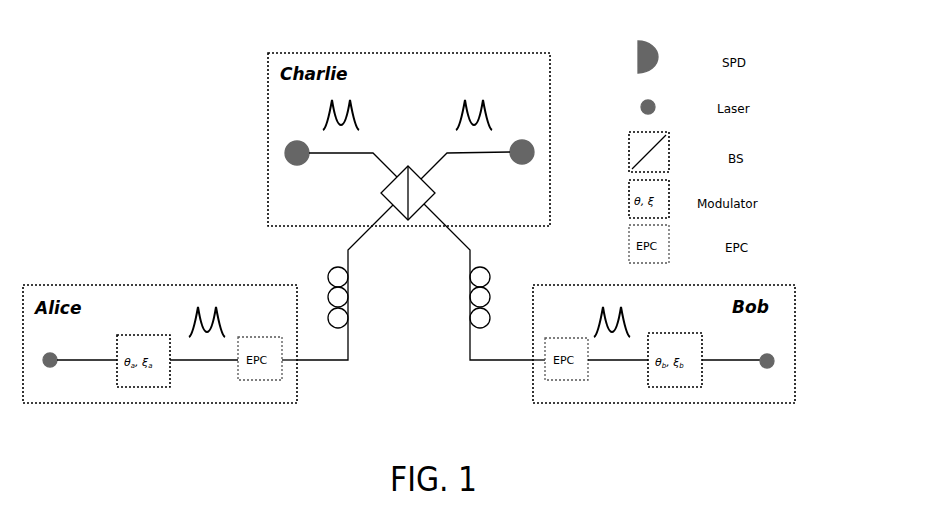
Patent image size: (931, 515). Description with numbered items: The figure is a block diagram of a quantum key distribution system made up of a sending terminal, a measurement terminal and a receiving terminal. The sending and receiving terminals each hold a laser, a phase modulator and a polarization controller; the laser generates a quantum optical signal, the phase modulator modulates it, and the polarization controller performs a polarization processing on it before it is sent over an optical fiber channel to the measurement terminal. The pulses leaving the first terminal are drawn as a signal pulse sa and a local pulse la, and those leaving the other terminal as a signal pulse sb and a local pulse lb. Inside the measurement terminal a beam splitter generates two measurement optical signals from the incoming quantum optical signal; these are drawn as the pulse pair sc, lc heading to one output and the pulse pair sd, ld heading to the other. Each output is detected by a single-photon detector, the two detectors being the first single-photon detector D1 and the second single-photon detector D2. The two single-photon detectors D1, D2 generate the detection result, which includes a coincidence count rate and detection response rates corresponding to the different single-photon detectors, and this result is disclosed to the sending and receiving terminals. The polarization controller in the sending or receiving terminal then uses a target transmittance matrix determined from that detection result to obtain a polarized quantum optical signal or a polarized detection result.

The single photon detector D1 is at (297, 170).
The single photon detector D2 is at (522, 169).
The signal pulse of Alice sa is at (198, 332).
The local pulse of Alice la is at (216, 332).
The signal pulse of Bob sb is at (603, 333).
The local pulse of Bob lb is at (621, 333).
The signal pulse at detector D1 sc is at (332, 125).
The local pulse at detector D1 lc is at (350, 125).
The signal pulse at detector D2 sd is at (465, 125).
The local pulse at detector D2 ld is at (483, 125).